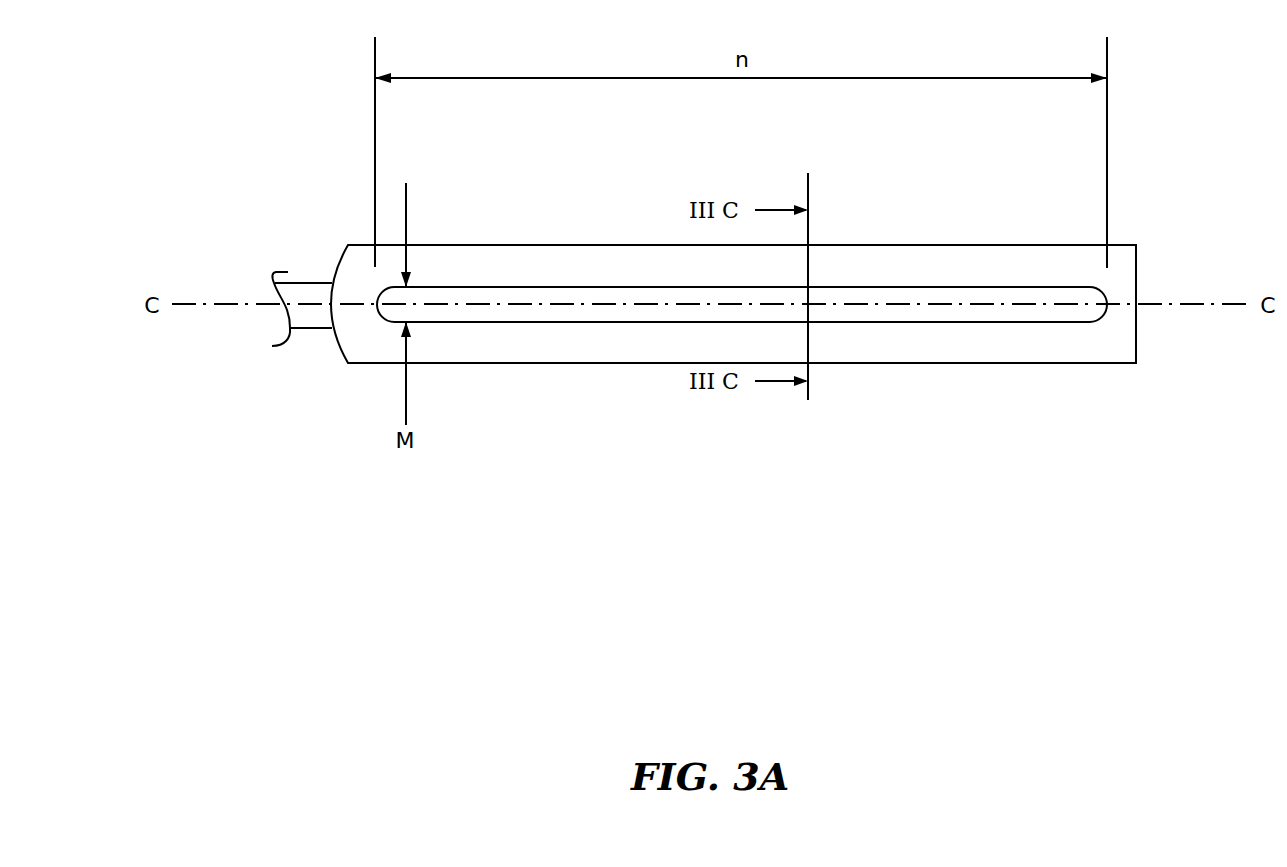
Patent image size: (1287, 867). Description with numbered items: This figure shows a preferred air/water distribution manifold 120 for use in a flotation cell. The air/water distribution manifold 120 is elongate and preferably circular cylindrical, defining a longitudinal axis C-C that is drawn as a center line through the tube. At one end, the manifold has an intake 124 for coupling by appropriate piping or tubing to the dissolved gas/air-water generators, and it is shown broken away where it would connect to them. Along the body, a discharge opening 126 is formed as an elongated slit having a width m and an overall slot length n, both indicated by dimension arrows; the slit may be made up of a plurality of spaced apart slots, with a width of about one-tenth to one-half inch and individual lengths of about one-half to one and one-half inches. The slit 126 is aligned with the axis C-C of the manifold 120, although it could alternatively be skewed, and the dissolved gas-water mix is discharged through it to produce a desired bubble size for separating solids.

The air/water distribution manifold 120 is at (1037, 245).
The intake 124 is at (315, 292).
The discharge opening 126 is at (455, 300).